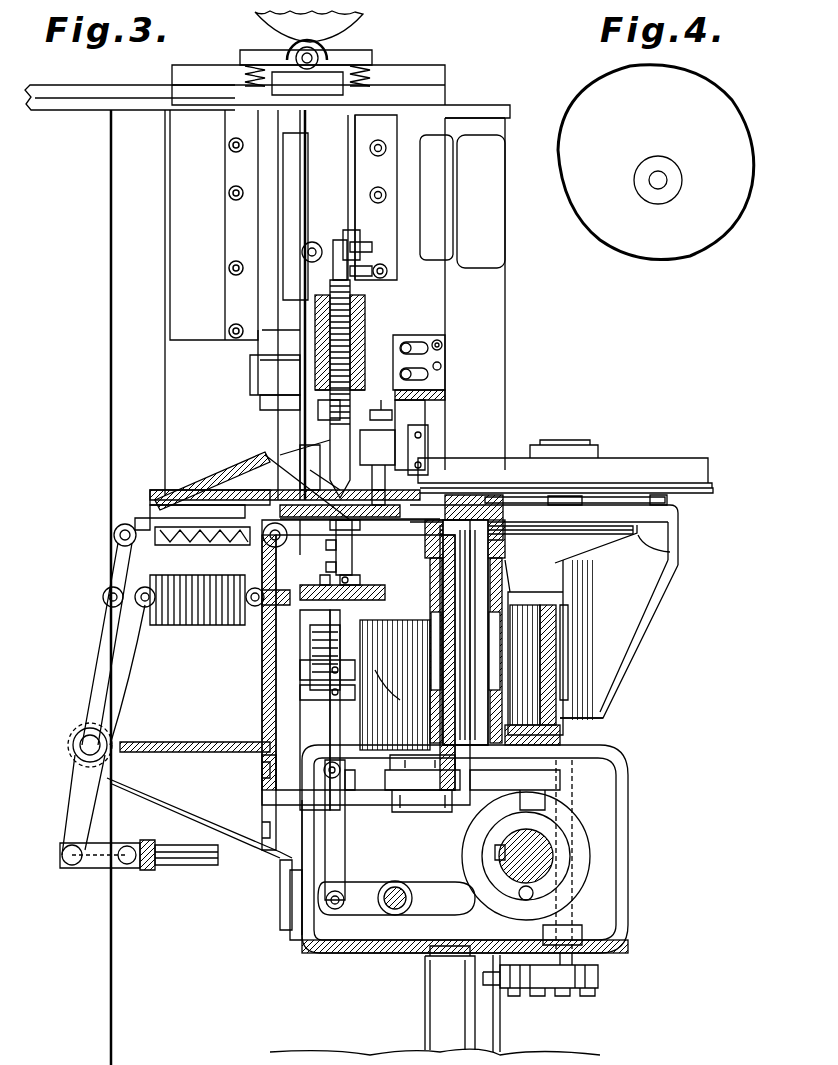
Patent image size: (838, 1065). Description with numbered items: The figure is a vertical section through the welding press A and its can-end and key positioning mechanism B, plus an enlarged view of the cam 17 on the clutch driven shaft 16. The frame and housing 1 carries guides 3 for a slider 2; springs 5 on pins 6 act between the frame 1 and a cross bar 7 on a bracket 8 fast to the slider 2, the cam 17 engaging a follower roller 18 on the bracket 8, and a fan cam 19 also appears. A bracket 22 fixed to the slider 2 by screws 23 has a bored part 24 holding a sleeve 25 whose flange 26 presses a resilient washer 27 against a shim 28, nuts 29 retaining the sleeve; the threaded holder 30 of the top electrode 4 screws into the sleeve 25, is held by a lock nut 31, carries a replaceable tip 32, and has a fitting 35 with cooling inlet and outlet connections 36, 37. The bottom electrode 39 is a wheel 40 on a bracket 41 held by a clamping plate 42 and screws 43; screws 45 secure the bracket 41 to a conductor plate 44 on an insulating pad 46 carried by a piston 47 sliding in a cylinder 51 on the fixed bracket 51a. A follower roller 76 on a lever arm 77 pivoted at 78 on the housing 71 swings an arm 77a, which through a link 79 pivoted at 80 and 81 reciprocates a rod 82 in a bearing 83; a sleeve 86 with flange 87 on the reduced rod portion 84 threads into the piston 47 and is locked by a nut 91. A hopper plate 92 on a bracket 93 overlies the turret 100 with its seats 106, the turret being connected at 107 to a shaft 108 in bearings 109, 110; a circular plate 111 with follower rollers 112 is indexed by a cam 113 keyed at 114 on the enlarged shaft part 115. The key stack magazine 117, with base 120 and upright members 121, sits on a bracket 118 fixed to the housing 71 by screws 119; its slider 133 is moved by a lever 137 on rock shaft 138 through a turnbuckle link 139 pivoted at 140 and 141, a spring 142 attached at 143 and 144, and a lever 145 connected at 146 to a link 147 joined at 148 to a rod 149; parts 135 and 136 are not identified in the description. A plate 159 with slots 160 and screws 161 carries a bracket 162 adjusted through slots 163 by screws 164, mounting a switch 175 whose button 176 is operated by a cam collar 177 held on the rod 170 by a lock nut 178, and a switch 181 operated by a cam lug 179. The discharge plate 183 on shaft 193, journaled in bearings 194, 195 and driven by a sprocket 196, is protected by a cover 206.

In FIG. 3, the combined frame and housing 1 is at (472, 120).
In FIG. 3, the slider 2 is at (285, 115).
In FIG. 3, the guides 3 is at (235, 172).
In FIG. 3, the top electrode 4 is at (338, 445).
In FIG. 3, the springs 5 is at (375, 80).
In FIG. 3, the frame carried pins 6 is at (365, 66).
In FIG. 3, the cross bar 7 is at (348, 57).
In FIG. 3, the bracket 8 is at (318, 78).
In FIG. 4, the driven shaft of the clutch 16 is at (660, 172).
In FIG. 4, the cam 17 is at (745, 170).
In FIG. 3, the follower roller 18 is at (290, 47).
In FIG. 3, the fan cam 19 is at (310, 18).
In FIG. 3, the bracket 22 is at (330, 395).
In FIG. 3, the screws 23 is at (300, 398).
In FIG. 3, the vertically bored part 24 is at (318, 350).
In FIG. 3, the sleeve 25 is at (318, 338).
In FIG. 3, the flange 26 is at (300, 437).
In FIG. 3, the resilient rubber washer 27 is at (325, 410).
In FIG. 3, the shim 28 is at (325, 365).
In FIG. 3, the nuts 29 is at (362, 320).
In FIG. 3, the holder 30 is at (310, 455).
In FIG. 3, the lock nut 31 is at (330, 290).
In FIG. 3, the replaceable electrode tip 32 is at (338, 482).
In FIG. 3, the fitting 35 is at (343, 248).
In FIG. 3, the inlet connection 36 is at (362, 248).
In FIG. 3, the outlet connection 37 is at (375, 268).
In FIG. 3, the bottom electrode 39 is at (352, 550).
In FIG. 3, the wheel or disk 40 is at (360, 528).
In FIG. 3, the bracket 41 is at (340, 572).
In FIG. 3, the clamping plate 42 is at (306, 536).
In FIG. 3, the screws 43 is at (326, 566).
In FIG. 3, the conductor plate 44 is at (370, 595).
In FIG. 3, the screws 45 is at (362, 580).
In FIG. 3, the insulating separator pad 46 is at (300, 630).
In FIG. 3, the piston 47 is at (300, 645).
In FIG. 3, the cylinder 51 is at (360, 625).
In FIG. 3, the fixed bracket 51a is at (396, 680).
In FIG. 3, the housing 71 is at (300, 935).
In FIG. 3, the follower roller 76 is at (520, 918).
In FIG. 3, the lever arm 77 is at (396, 898).
In FIG. 3, the lever arm 77a is at (340, 945).
In FIG. 3, the pivot 78 is at (393, 886).
In FIG. 3, the link 79 is at (345, 812).
In FIG. 3, the pivot 80 is at (295, 888).
In FIG. 3, the pivot 81 is at (360, 788).
In FIG. 3, the rod 82 is at (345, 770).
In FIG. 3, the bearing 83 is at (268, 728).
In FIG. 3, the reduced diameter rod portion 84 is at (325, 648).
In FIG. 3, the sleeve 86 is at (395, 685).
In FIG. 3, the flange 87 is at (310, 690).
In FIG. 3, the lock nut 91 is at (320, 670).
In FIG. 3, the hopper plate 92 is at (690, 512).
In FIG. 3, the bracket 93 is at (645, 605).
In FIG. 3, the transverse turret 100 is at (680, 548).
In FIG. 3, the can end receiving seats 106 is at (580, 540).
In FIG. 3, the connection 107 is at (500, 470).
In FIG. 3, the vertical shaft 108 is at (465, 632).
In FIG. 3, the bearing 109 is at (530, 577).
In FIG. 3, the bearing 110 is at (545, 690).
In FIG. 3, the circular plate 111 is at (600, 760).
In FIG. 3, the follower rollers 112 is at (432, 805).
In FIG. 3, the indexing cam 113 is at (580, 835).
In FIG. 3, the key 114 is at (495, 852).
In FIG. 3, the enlarged part of shaft 115 is at (555, 870).
In FIG. 3, the key stack magazine 117 is at (200, 470).
In FIG. 3, the bracket 118 is at (125, 740).
In FIG. 3, the screws 119 is at (264, 826).
In FIG. 3, the base 120 is at (185, 490).
In FIG. 3, the upright members 121 is at (305, 160).
In FIG. 3, the slider 133 is at (270, 500).
In FIG. 3, the bracket 135 is at (146, 505).
In FIG. 3, the plate 136 is at (355, 505).
In FIG. 3, the lever 137 is at (100, 627).
In FIG. 3, the rock shaft 138 is at (80, 745).
In FIG. 3, the adjustable turnbuckle link 139 is at (197, 545).
In FIG. 3, the pivot 140 is at (114, 532).
In FIG. 3, the pivot 141 is at (262, 542).
In FIG. 3, the spring 142 is at (180, 625).
In FIG. 3, the spring connection 143 is at (135, 590).
In FIG. 3, the spring connection 144 is at (262, 588).
In FIG. 3, the lever 145 is at (72, 790).
In FIG. 3, the connection 146 is at (92, 866).
In FIG. 3, the link 147 is at (95, 885).
In FIG. 3, the connection 148 is at (140, 868).
In FIG. 3, the rod 149 is at (195, 870).
In FIG. 3, the plate 159 is at (445, 345).
In FIG. 3, the slots 160 is at (440, 355).
In FIG. 3, the screws 161 is at (445, 338).
In FIG. 3, the bracket 162 is at (445, 397).
In FIG. 3, the horizontal slots 163 is at (440, 390).
In FIG. 3, the screws 164 is at (430, 376).
In FIG. 3, the rod 170 is at (400, 500).
In FIG. 3, the switch 175 is at (425, 415).
In FIG. 3, the operating button 176 is at (379, 460).
In FIG. 3, the cam collar 177 is at (376, 408).
In FIG. 3, the lock nut 178 is at (372, 512).
In FIG. 3, the cam lug 179 is at (390, 496).
In FIG. 3, the switch 181 is at (425, 440).
In FIG. 3, the discharge plate 183 is at (715, 495).
In FIG. 3, the shaft 193 is at (560, 905).
In FIG. 3, the bearing 194 is at (608, 711).
In FIG. 3, the bearing 195 is at (585, 940).
In FIG. 3, the sprocket 196 is at (600, 980).
In FIG. 3, the cover 206 is at (700, 468).
In FIG. 3, the welding press A is at (99, 401).
In FIG. 3, the mechanism B is at (520, 371).